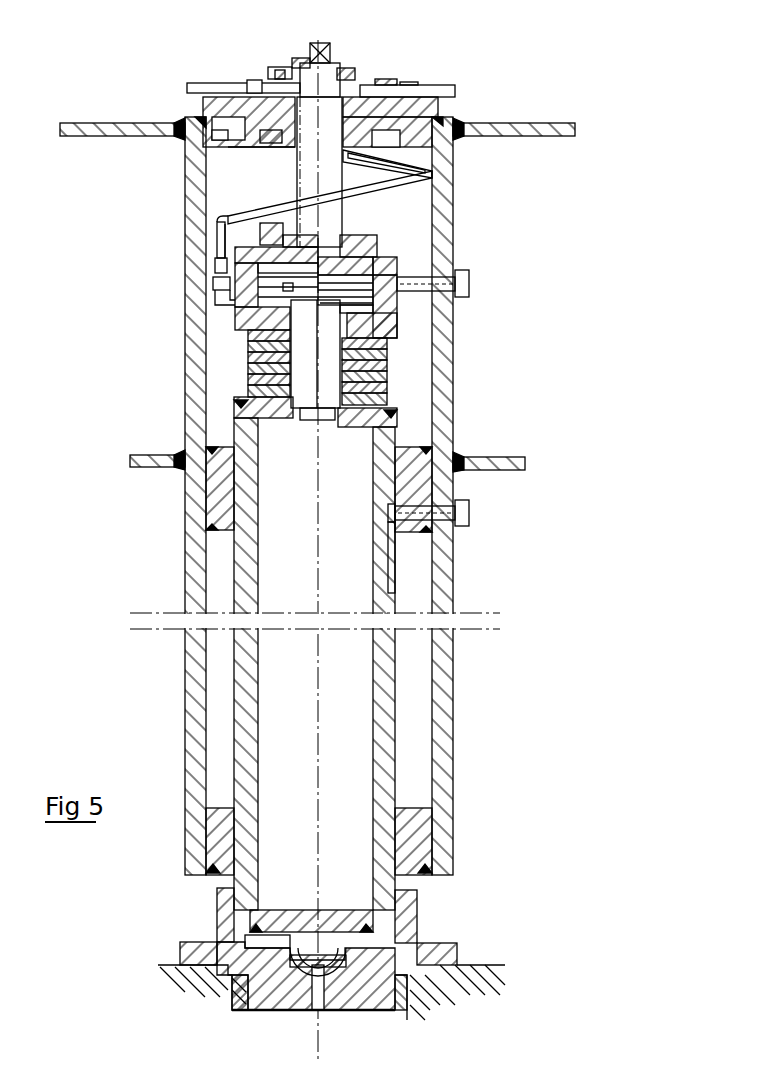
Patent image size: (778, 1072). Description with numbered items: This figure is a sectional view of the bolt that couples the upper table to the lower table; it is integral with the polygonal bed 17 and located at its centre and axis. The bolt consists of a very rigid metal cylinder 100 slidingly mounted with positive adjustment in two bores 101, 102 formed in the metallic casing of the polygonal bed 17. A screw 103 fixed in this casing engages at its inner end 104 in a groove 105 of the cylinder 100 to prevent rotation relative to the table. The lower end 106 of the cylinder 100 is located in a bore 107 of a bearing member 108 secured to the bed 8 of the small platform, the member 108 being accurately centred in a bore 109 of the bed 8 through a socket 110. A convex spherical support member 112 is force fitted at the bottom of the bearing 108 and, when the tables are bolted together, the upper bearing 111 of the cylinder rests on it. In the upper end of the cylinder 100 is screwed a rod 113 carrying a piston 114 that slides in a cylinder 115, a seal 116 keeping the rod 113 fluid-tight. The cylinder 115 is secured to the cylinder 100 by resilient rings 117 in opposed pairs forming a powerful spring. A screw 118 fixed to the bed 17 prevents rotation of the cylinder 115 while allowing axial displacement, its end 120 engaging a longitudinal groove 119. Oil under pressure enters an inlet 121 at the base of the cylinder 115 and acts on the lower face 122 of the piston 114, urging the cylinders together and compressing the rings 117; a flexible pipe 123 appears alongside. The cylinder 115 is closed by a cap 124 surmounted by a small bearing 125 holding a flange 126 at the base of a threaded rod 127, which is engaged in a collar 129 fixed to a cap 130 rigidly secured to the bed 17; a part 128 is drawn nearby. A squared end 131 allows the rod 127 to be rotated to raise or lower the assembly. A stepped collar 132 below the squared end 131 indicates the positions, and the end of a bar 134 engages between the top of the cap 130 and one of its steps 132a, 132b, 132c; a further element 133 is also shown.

The bed 8 is at (180, 975).
The polygonal bed 17 is at (450, 447).
The cylinder 100 is at (385, 718).
The bore 101 is at (395, 477).
The bore 102 is at (398, 835).
The screw 103 is at (470, 515).
The inner end 104 is at (390, 515).
The groove 105 is at (391, 576).
The lower end 106 is at (410, 900).
The bore 107 is at (258, 942).
The bearing member 108 is at (190, 955).
The bore 109 is at (245, 1022).
The socket 110 is at (410, 990).
The upper bearing 111 is at (320, 930).
The convex spherical support member 112 is at (318, 960).
The rod 113 is at (345, 335).
The piston 114 is at (380, 303).
The cylinder 115 is at (385, 325).
The seal 116 is at (400, 335).
The resilient rings 117 is at (390, 405).
The screw 118 is at (470, 285).
The longitudinal groove 119 is at (400, 262).
The end 120 is at (400, 275).
The inlet 121 is at (283, 292).
The lower face 122 is at (288, 292).
The pipe 123 is at (232, 205).
The cap 124 is at (350, 270).
The small bearing 125 is at (378, 245).
The flange 126 is at (335, 242).
The threaded rod 127 is at (440, 180).
The spring 128 is at (435, 172).
The collar 129 is at (290, 142).
The cap 130 is at (205, 110).
The squared end 131 is at (343, 65).
The stepped collar 132 is at (345, 92).
The step 132a is at (308, 66).
The step 132b is at (292, 62).
The step 132c is at (272, 70).
The plate 133 is at (392, 88).
The bar 134 is at (440, 95).